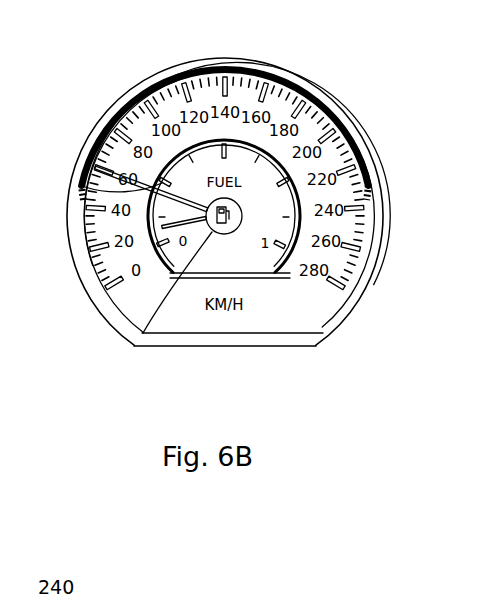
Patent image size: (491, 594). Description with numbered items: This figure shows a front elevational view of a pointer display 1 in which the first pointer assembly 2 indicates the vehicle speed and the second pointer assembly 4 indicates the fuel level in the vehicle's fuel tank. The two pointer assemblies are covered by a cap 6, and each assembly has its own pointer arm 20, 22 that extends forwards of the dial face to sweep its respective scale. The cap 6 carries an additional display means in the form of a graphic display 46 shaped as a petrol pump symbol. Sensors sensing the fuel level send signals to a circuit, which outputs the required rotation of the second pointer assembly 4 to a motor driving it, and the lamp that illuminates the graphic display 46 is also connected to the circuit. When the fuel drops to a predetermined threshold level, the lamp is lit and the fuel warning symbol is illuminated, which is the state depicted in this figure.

The pointer display 1 is at (345, 78).
The first pointer assembly 2 is at (201, 203).
The second pointer assembly 4 is at (185, 218).
The cap 6 is at (243, 210).
The pointer arm 20 is at (73, 178).
The pointer arm 22 is at (135, 349).
The graphic display 46 is at (228, 233).